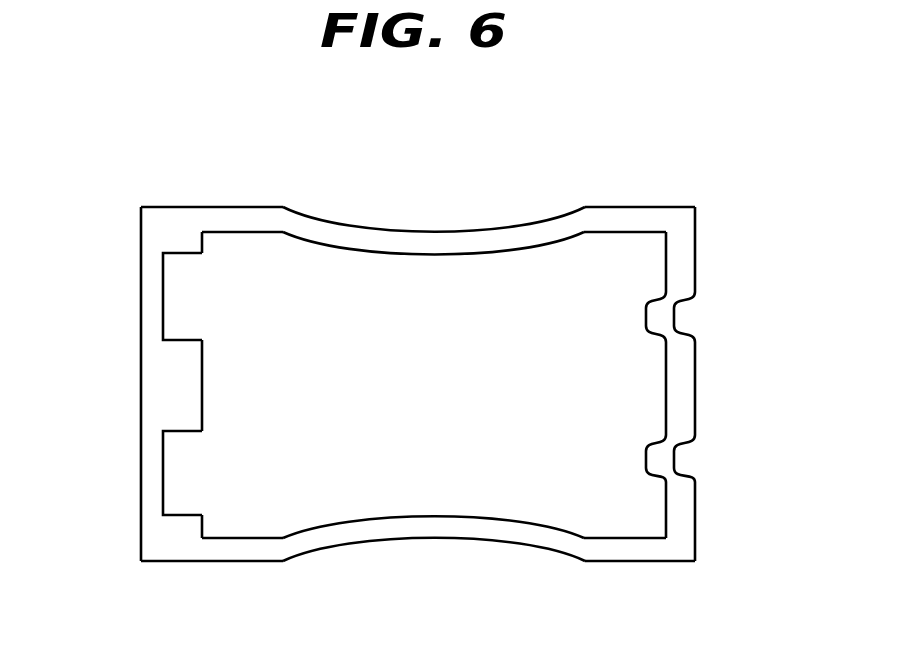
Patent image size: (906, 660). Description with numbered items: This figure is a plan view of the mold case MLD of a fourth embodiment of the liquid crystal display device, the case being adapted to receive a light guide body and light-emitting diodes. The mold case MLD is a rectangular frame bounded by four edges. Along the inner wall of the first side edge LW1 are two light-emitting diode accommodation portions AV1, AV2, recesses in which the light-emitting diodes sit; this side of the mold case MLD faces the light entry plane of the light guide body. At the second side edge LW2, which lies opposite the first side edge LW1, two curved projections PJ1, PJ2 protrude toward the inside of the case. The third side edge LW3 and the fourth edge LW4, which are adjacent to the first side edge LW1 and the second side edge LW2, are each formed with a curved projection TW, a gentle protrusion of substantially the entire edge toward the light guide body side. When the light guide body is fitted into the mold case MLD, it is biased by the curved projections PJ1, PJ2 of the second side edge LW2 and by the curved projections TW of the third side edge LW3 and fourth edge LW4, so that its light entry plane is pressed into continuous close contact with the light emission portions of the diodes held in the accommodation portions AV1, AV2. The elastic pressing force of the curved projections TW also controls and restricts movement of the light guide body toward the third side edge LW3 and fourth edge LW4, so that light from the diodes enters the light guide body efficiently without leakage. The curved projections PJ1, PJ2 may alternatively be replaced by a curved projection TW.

The mold case MLD is at (217, 207).
The first side edge LW1 is at (127, 378).
The second side edge LW2 is at (705, 371).
The third side edge LW3 is at (419, 204).
The fourth edge LW4 is at (407, 557).
The curved projection TW is at (467, 222).
The curved projection PJ1 is at (689, 313).
The curved projection PJ2 is at (682, 462).
The light-emitting diode accommodation portion AV1 is at (178, 262).
The light-emitting diode accommodation portion AV2 is at (172, 446).